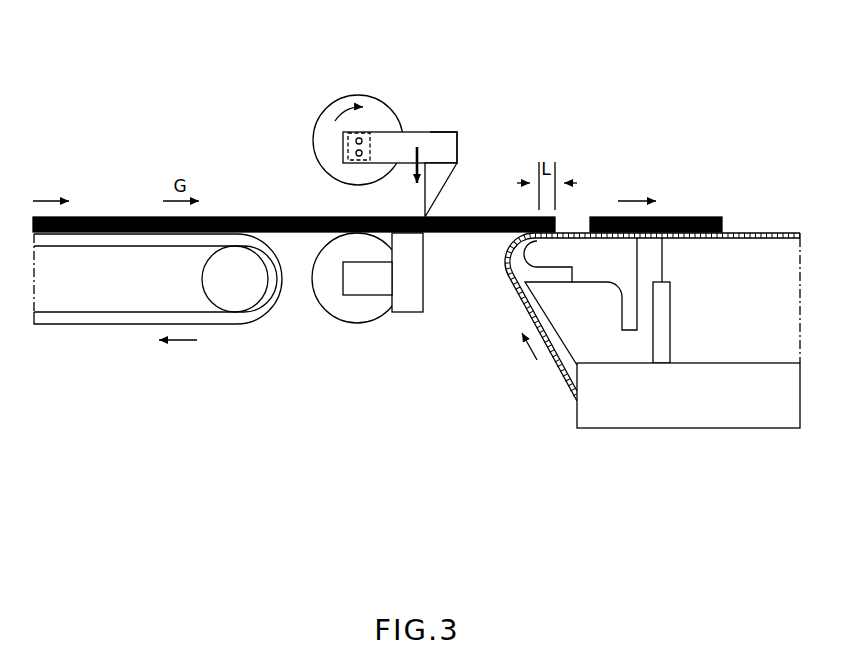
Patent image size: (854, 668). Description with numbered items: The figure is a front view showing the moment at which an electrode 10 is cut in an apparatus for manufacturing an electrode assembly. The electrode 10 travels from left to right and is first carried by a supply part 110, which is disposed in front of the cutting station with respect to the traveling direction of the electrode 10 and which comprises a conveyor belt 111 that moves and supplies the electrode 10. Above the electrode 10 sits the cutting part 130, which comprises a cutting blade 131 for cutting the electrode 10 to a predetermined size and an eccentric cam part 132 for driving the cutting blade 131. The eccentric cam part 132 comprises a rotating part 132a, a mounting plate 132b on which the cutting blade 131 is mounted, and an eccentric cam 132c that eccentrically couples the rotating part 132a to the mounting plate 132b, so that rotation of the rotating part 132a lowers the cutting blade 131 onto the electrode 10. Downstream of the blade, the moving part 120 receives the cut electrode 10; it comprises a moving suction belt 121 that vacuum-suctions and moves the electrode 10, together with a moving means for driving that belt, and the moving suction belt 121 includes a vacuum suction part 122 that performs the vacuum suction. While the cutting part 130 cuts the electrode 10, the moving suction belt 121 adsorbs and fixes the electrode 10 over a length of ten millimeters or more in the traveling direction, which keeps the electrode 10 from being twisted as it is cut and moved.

The electrode 10 is at (248, 217).
The supply part 110 is at (158, 329).
The conveyor belt 111 is at (118, 324).
The moving part 120 is at (659, 286).
The moving suction belt 121 is at (584, 224).
The vacuum suction part 122 is at (739, 233).
The cutting part 130 is at (385, 118).
The cutting blade 131 is at (444, 188).
The eccentric cam part 132 is at (408, 122).
The rotating part 132a is at (341, 101).
The mounting plate 132b is at (438, 147).
The eccentric cam 132c is at (348, 147).